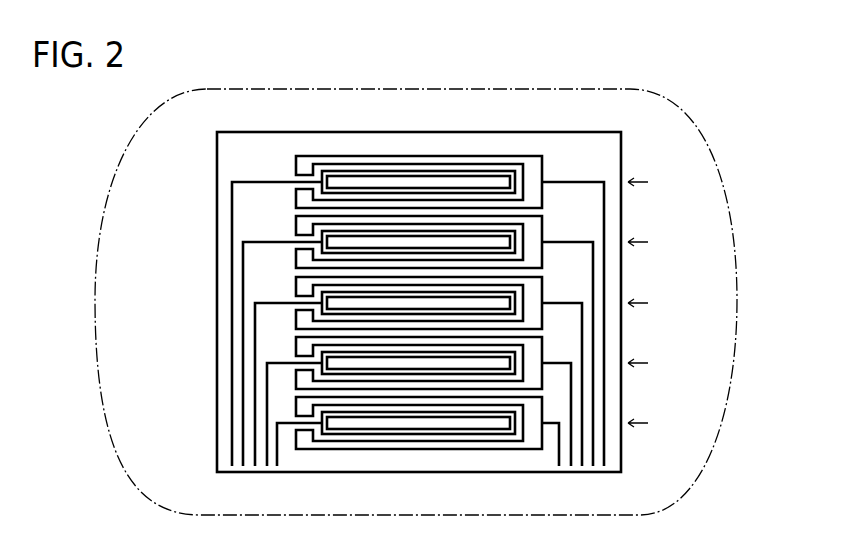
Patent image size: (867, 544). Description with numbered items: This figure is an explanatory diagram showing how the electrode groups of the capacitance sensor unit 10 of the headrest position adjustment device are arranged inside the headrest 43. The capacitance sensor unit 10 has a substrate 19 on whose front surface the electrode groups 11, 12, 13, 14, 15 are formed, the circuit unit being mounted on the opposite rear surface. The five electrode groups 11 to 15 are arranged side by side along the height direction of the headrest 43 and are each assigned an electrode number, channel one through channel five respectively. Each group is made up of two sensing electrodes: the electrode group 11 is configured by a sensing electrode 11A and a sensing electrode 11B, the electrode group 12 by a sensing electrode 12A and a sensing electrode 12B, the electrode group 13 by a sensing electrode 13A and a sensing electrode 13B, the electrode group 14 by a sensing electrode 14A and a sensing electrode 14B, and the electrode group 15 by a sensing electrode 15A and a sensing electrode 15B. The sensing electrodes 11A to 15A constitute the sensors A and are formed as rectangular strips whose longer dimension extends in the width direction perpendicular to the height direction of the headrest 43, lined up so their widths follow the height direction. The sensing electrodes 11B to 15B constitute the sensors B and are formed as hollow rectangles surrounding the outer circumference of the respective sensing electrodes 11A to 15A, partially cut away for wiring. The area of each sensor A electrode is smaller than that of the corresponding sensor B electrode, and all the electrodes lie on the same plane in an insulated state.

The capacitance sensor unit 10 is at (462, 108).
The substrate 19 is at (541, 131).
The headrest 43 is at (350, 88).
The electrode group 11 is at (163, 396).
The sensing electrode 11A is at (349, 425).
The sensing electrode 11B is at (296, 410).
The electrode group 12 is at (163, 336).
The sensing electrode 12A is at (349, 365).
The sensing electrode 12B is at (296, 350).
The electrode group 13 is at (163, 276).
The sensing electrode 13A is at (349, 305).
The sensing electrode 13B is at (296, 290).
The electrode group 14 is at (163, 215).
The sensing electrode 14A is at (349, 244).
The sensing electrode 14B is at (296, 229).
The electrode group 15 is at (163, 155).
The sensing electrode 15A is at (349, 184).
The sensing electrode 15B is at (296, 169).